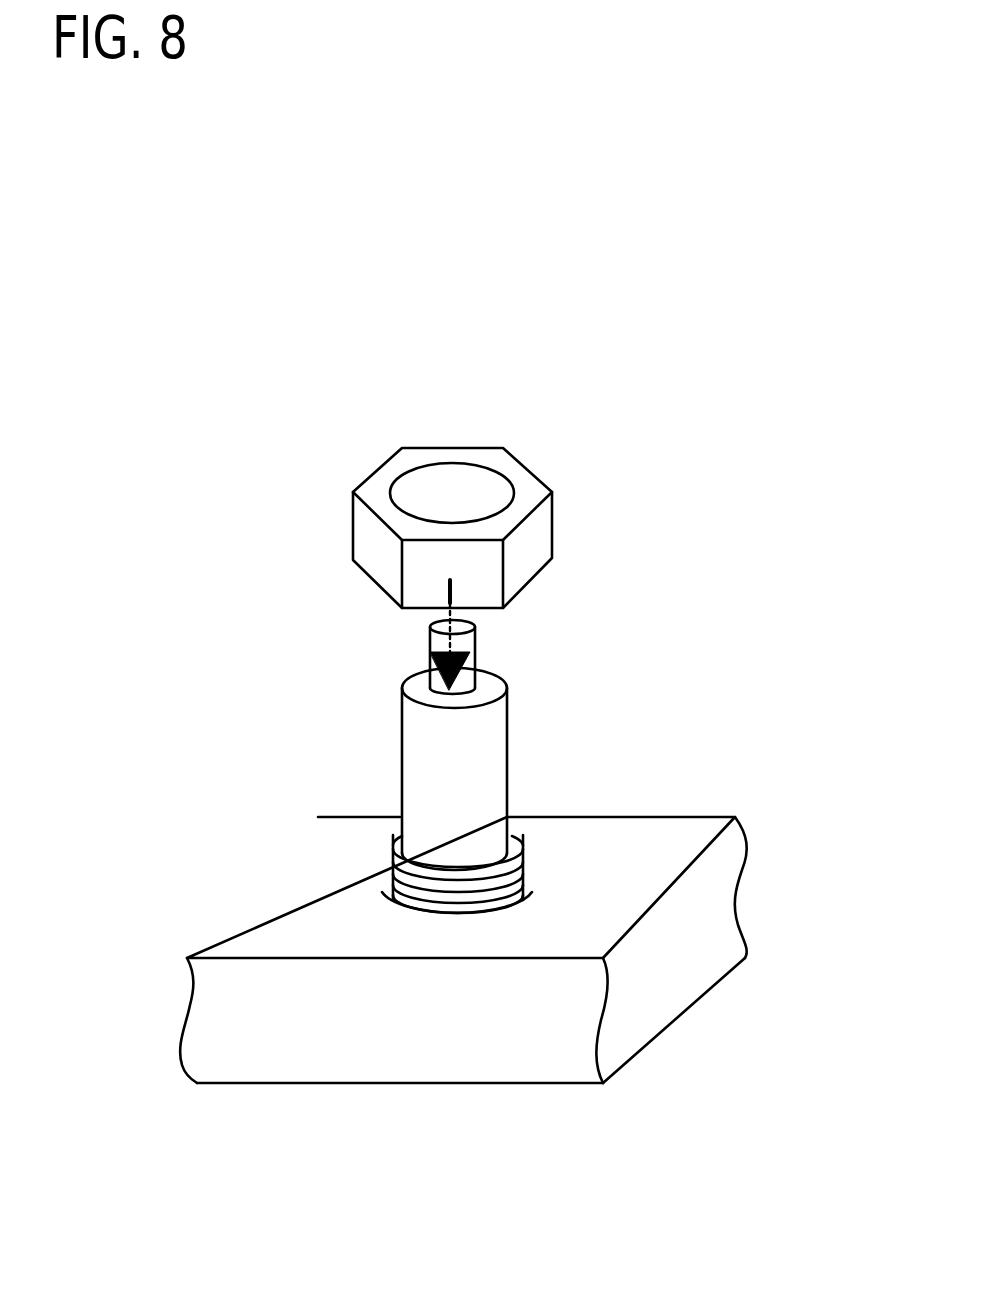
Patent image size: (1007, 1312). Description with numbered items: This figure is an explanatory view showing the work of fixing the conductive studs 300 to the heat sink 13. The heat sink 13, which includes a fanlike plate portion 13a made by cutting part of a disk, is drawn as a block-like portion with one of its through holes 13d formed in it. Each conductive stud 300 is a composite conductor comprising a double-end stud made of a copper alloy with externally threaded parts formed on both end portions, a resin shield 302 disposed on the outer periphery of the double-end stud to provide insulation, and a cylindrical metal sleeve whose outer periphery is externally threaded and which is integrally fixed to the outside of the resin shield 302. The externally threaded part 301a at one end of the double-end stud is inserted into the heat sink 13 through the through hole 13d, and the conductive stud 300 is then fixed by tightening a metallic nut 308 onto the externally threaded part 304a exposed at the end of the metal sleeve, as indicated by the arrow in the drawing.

The heat sink 13 is at (307, 890).
The plate portion 13a is at (652, 833).
The through hole 13d is at (495, 904).
The conductive stud 300 is at (433, 745).
The externally threaded part 301a is at (430, 641).
The resin shield 302 is at (397, 792).
The externally threaded part 304a is at (520, 858).
The metallic nut 308 is at (497, 466).